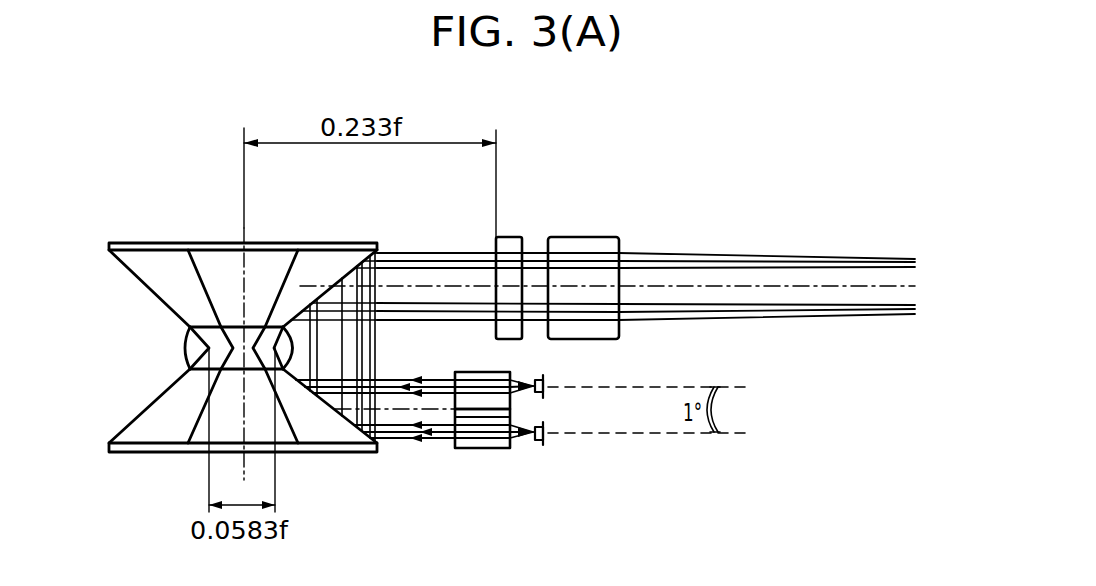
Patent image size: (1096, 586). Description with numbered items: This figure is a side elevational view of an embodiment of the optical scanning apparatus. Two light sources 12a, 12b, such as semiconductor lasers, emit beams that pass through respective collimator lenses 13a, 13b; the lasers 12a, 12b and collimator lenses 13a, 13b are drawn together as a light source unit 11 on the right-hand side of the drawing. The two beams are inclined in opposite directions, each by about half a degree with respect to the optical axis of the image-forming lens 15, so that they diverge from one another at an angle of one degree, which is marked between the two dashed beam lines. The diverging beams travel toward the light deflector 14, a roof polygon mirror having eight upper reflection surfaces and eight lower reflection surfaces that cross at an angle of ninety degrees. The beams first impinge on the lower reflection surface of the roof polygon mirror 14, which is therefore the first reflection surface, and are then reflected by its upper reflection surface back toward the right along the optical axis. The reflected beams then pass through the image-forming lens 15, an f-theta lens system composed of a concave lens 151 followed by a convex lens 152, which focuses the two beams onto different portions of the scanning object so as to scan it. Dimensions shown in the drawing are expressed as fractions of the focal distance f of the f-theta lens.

The light source unit 11 is at (563, 468).
The light source 12a is at (544, 383).
The light source 12b is at (544, 440).
The collimator lens 13a is at (473, 374).
The collimator lens 13b is at (510, 426).
The light deflector 14 is at (323, 262).
The image-forming lens 15 is at (642, 172).
The concave lens 151 is at (510, 243).
The convex lens 152 is at (596, 243).